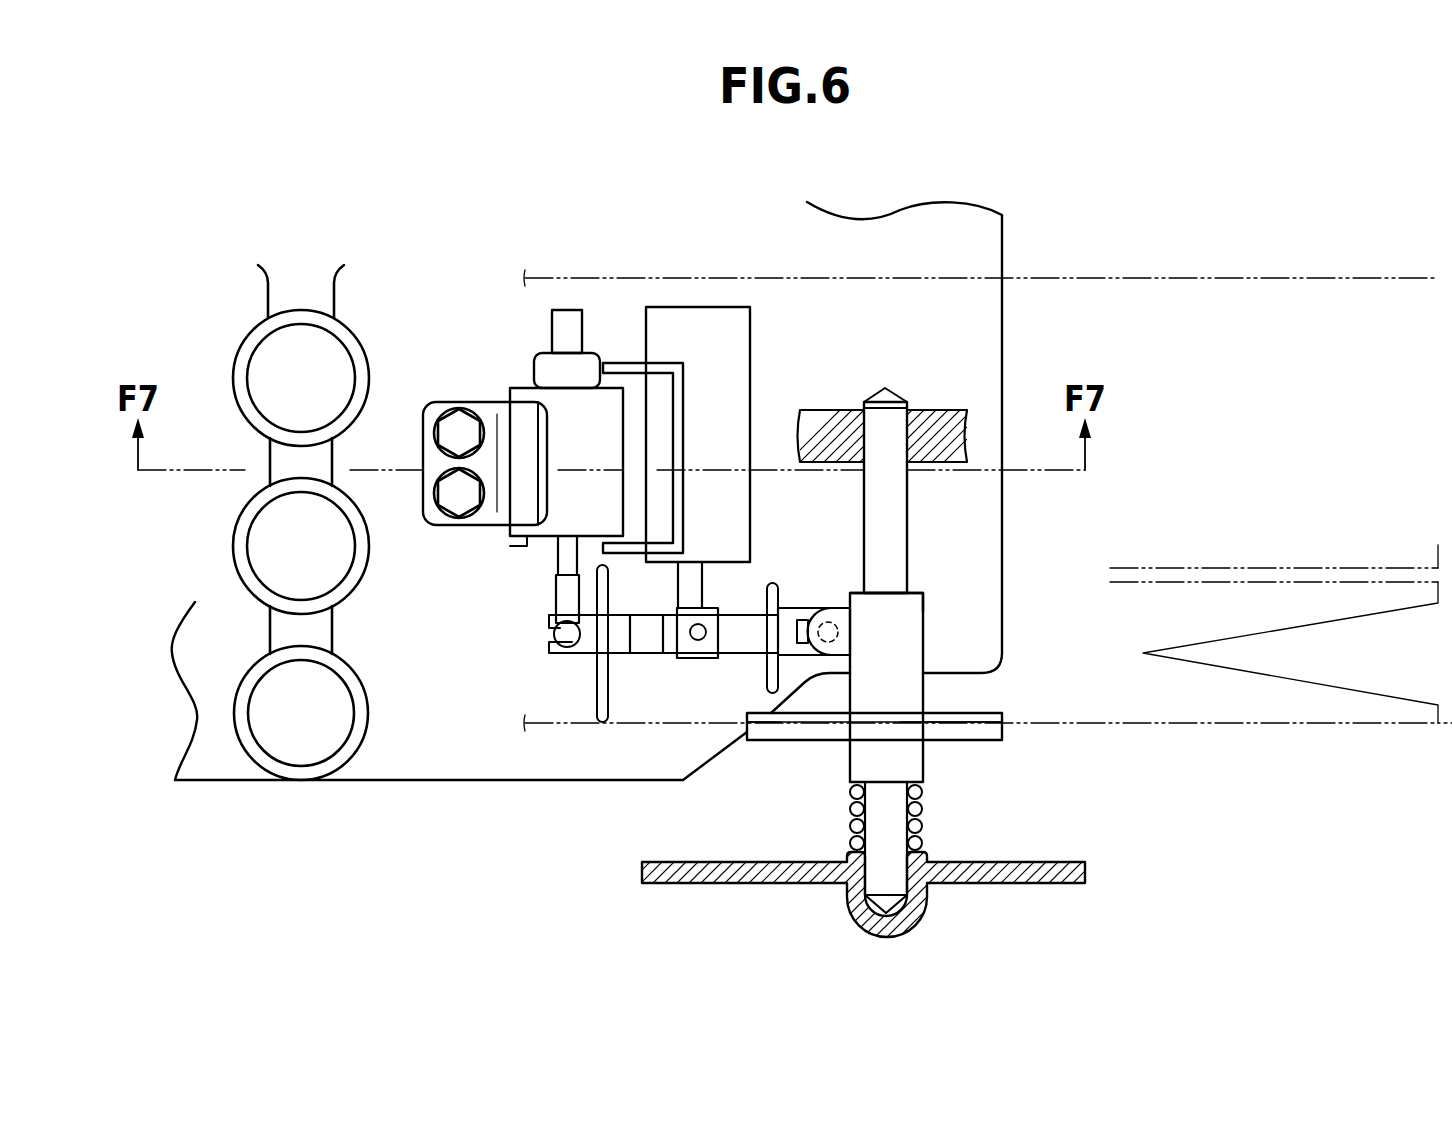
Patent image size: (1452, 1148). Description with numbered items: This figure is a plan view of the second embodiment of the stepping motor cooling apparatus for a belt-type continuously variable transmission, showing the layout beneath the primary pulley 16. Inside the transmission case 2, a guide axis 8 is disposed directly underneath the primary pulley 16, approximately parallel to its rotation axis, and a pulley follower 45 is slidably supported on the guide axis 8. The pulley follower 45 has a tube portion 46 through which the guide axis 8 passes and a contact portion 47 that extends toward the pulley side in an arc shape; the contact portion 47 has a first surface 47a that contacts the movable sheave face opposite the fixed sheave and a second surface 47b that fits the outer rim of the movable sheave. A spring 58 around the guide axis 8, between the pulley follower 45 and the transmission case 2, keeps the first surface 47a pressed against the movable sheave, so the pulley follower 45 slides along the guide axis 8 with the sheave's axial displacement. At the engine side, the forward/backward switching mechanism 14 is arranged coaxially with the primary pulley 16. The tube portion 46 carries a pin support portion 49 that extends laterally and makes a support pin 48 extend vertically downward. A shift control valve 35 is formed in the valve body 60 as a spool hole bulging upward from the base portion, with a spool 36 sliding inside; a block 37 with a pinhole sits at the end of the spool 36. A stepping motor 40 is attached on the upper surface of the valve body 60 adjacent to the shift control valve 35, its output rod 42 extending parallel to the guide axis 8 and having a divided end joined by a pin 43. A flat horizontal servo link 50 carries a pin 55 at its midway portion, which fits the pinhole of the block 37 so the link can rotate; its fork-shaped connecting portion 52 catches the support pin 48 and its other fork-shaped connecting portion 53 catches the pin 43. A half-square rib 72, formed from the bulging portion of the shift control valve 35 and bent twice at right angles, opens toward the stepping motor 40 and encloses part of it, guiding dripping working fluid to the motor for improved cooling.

The transmission case 2 is at (718, 884).
The guide axis 8 is at (893, 512).
The forward/backward switching mechanism 14 is at (1180, 279).
The primary pulley 16 is at (1320, 682).
The shift control valve 35 is at (752, 348).
The spool 36 is at (678, 592).
The block 37 is at (712, 608).
The stepping motor 40 is at (522, 538).
The output rod 42 is at (556, 575).
The pin 43 is at (550, 632).
The pulley follower 45 is at (925, 640).
The tube portion 46 is at (923, 605).
The contact portion 47 is at (1002, 726).
The first surface 47a is at (752, 718).
The second surface 47b is at (975, 714).
The support pin 48 is at (828, 622).
The pin support portion 49 is at (803, 620).
The servo link 50 is at (620, 655).
The connecting portion 52 is at (788, 618).
The connecting portion 53 is at (555, 648).
The pin 55 is at (698, 641).
The spring 58 is at (922, 803).
The valve body 60 is at (440, 780).
The rib 72 is at (688, 400).